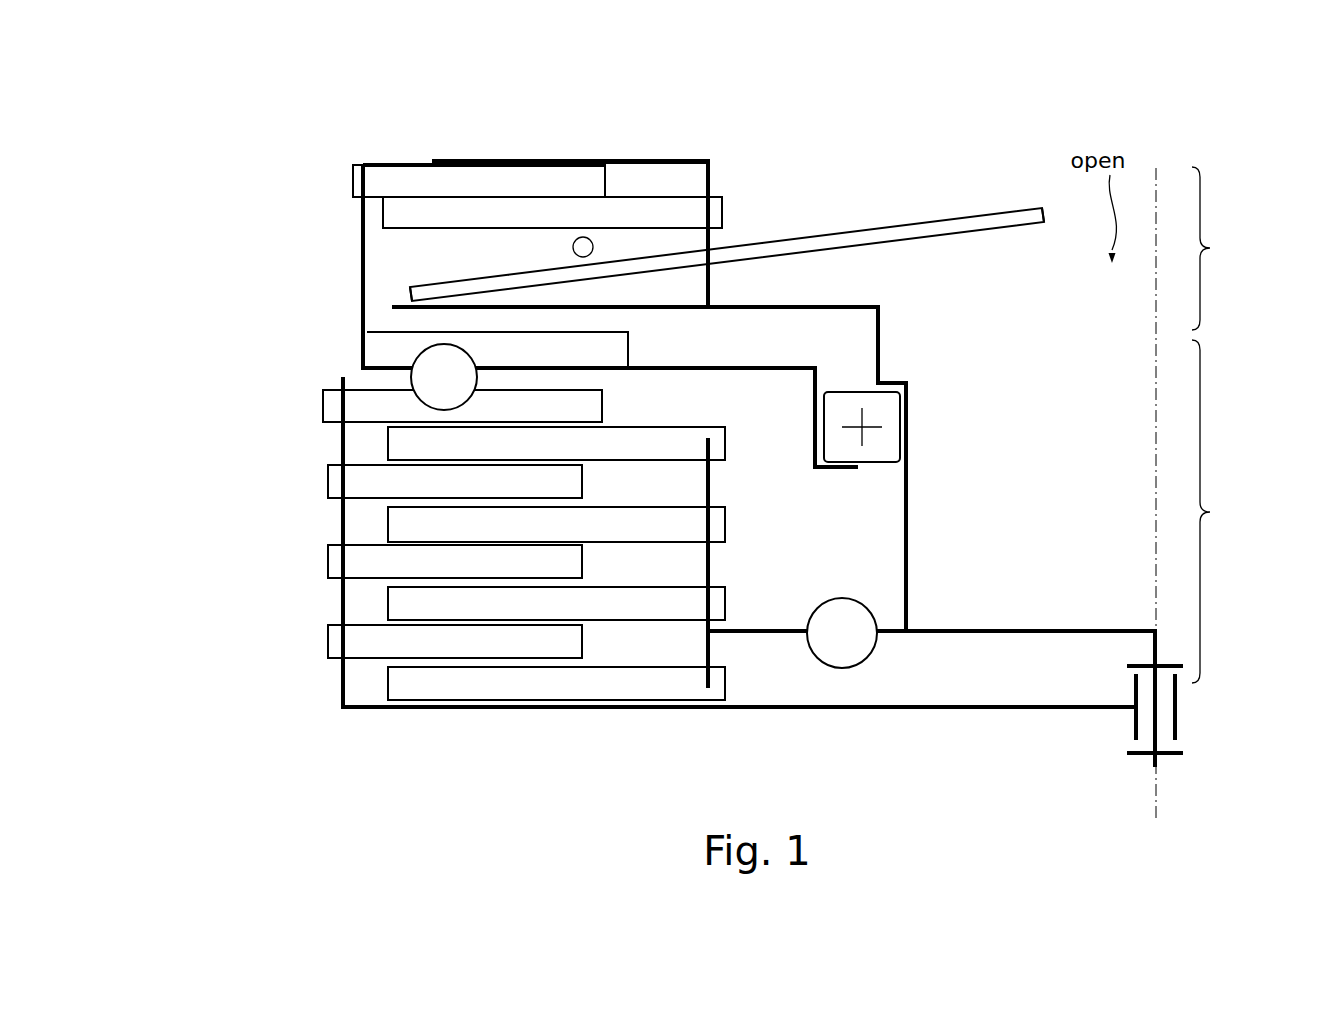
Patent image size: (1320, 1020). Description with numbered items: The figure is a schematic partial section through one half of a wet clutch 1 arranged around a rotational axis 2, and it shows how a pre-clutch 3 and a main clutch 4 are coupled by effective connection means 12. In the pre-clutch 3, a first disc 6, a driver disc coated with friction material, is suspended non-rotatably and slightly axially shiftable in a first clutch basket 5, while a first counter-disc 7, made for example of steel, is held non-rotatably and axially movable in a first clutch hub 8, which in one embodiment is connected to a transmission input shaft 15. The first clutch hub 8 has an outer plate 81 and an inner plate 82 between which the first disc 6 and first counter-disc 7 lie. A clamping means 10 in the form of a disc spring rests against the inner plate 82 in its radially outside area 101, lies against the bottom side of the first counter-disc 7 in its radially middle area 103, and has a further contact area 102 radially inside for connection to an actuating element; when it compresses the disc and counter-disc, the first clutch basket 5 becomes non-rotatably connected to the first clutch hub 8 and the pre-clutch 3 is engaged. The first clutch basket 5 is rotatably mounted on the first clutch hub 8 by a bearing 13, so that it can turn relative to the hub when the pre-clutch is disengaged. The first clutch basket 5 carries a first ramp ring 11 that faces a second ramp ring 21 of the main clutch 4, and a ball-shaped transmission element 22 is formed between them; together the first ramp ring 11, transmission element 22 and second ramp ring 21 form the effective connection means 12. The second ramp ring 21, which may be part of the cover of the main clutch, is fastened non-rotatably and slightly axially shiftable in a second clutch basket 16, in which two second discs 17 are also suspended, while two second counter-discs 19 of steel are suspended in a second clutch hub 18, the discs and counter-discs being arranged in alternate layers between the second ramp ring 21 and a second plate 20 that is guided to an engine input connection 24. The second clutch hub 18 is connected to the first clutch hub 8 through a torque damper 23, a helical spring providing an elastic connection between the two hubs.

The clutch 1 is at (868, 150).
The rotational axis 2 is at (1157, 186).
The pre-clutch 3 is at (1214, 248).
The main clutch 4 is at (1216, 511).
The first clutch basket 5 is at (362, 275).
The first disc 6 is at (373, 182).
The first counter-disc 7 is at (397, 217).
The first clutch hub 8 is at (710, 170).
The clamping means 10 is at (394, 283).
The first ramp ring 11 is at (386, 346).
The effective connection means 12 is at (257, 386).
The bearing 13 is at (885, 410).
The transmission input shaft 15 is at (1160, 757).
The second clutch basket 16 is at (342, 686).
The second discs 17 is at (340, 483).
The second clutch hub 18 is at (712, 473).
The second counter-discs 19 is at (662, 437).
The second plate 20 is at (586, 710).
The second ramp ring 21 is at (354, 405).
The transmission element 22 is at (421, 383).
The torque damper 23 is at (855, 648).
The engine input connection 24 is at (1134, 722).
The outer plate 81 is at (516, 155).
The inner plate 82 is at (680, 315).
The radially outside area 101 is at (437, 295).
The contact area 102 is at (1015, 183).
The radially middle area 103 is at (572, 247).